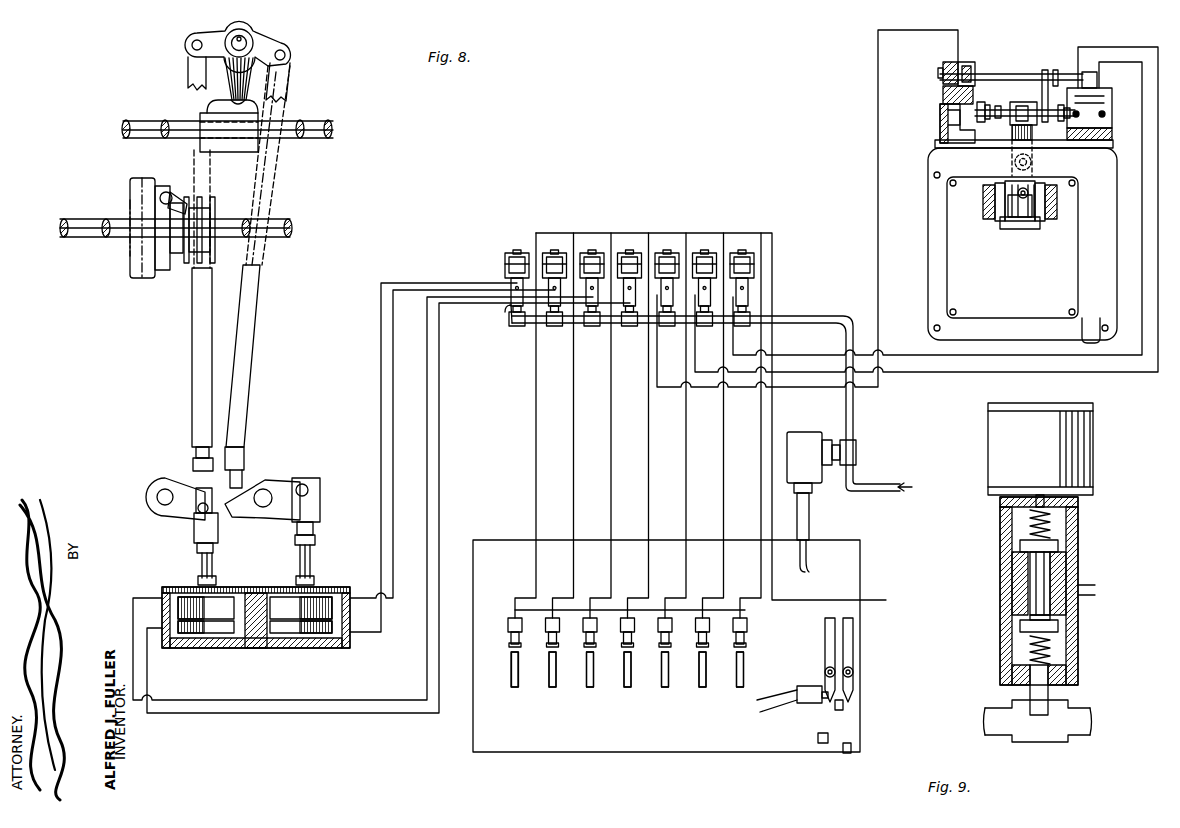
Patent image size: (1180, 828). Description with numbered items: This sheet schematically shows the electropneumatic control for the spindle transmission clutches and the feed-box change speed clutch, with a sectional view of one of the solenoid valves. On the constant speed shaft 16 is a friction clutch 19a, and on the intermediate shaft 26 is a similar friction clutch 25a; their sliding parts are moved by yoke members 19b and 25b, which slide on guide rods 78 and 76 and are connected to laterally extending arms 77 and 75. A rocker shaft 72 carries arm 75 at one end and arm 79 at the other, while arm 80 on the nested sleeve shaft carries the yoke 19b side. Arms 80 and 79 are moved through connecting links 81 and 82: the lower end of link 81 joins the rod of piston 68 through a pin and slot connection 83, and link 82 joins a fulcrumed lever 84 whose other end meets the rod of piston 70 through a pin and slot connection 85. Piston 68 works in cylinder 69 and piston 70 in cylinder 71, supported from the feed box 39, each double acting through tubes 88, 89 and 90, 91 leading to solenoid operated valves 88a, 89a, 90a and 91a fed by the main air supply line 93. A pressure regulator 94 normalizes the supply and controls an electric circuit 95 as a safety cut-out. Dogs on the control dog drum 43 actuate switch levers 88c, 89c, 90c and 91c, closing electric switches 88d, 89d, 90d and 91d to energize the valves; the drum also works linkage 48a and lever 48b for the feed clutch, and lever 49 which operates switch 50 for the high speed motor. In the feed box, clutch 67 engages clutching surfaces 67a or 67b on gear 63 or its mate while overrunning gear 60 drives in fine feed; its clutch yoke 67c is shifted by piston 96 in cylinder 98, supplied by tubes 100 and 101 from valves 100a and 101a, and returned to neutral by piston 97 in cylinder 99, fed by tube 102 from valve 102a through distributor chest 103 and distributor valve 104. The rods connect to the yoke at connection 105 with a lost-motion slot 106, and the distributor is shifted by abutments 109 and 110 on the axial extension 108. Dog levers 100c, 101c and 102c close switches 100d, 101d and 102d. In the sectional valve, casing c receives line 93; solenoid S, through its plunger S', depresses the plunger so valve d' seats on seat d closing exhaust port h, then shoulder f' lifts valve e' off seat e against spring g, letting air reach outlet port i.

In FIG. 8, the constant speed shaft 16 is at (122, 240).
In FIG. 8, the friction clutch 19a is at (146, 279).
In FIG. 8, the yoke member 19b is at (198, 162).
In FIG. 8, the friction clutch 25a is at (131, 204).
In FIG. 8, the yoke member 25b is at (196, 182).
In FIG. 8, the intermediate shaft 26 is at (78, 240).
In FIG. 8, the feed box 39 is at (948, 293).
In FIG. 8, the control dog drum 43 is at (862, 735).
In FIG. 8, the linkage 48a is at (854, 672).
In FIG. 8, the lever 48b is at (850, 638).
In FIG. 8, the lever 49 is at (854, 656).
In FIG. 8, the switch 50 is at (806, 687).
In FIG. 8, the overrunning gear 60 is at (990, 219).
In FIG. 8, the gear 63 is at (1052, 201).
In FIG. 8, the clutch 67 is at (1018, 222).
In FIG. 8, the clutching surface 67a is at (1033, 222).
In FIG. 8, the clutching surface 67b is at (1010, 222).
In FIG. 8, the clutch yoke 67c is at (1014, 160).
In FIG. 8, the piston 68 is at (216, 646).
In FIG. 8, the cylinder 69 is at (202, 606).
In FIG. 8, the piston 70 is at (318, 612).
In FIG. 8, the cylinder 71 is at (316, 650).
In FIG. 8, the rocker shaft 72 is at (245, 41).
In FIG. 8, the laterally extending arm 75 is at (224, 86).
In FIG. 8, the guide rod 76 is at (334, 131).
In FIG. 8, the laterally extending arm 77 is at (246, 92).
In FIG. 8, the guide rod 78 is at (286, 124).
In FIG. 8, the laterally extending arm 79 is at (284, 52).
In FIG. 8, the laterally extending arm 80 is at (222, 36).
In FIG. 8, the connecting link 81 is at (196, 372).
In FIG. 8, the connecting link 82 is at (266, 298).
In FIG. 8, the pin and slot connection 83 is at (200, 503).
In FIG. 8, the lever 84 is at (273, 483).
In FIG. 8, the pin and slot connection 85 is at (306, 488).
In FIG. 8, the tube 88 is at (148, 668).
In FIG. 8, the solenoid operated valve 88a is at (646, 283).
In FIG. 8, the switch lever 88c is at (624, 677).
In FIG. 8, the electric switch 88d is at (624, 634).
In FIG. 8, the tube 89 is at (135, 598).
In FIG. 8, the solenoid operated valve 89a is at (599, 330).
In FIG. 8, the switch lever 89c is at (586, 677).
In FIG. 8, the electric switch 89d is at (586, 634).
In FIG. 8, the tube 90 is at (360, 634).
In FIG. 8, the solenoid operated valve 90a is at (512, 326).
In FIG. 8, the switch lever 90c is at (510, 670).
In FIG. 8, the electric switch 90d is at (510, 622).
In FIG. 8, the tube 91 is at (393, 596).
In FIG. 8, the solenoid operated valve 91a is at (559, 330).
In FIG. 8, the switch lever 91c is at (548, 677).
In FIG. 8, the electric switch 91d is at (548, 634).
In FIG. 8, the main air supply line 93 is at (618, 327).
In FIG. 9, the main air supply line 93 is at (1092, 716).
In FIG. 8, the pressure regulator 94 is at (821, 486).
In FIG. 8, the electric circuit 95 is at (814, 560).
In FIG. 8, the piston 96 is at (1110, 135).
In FIG. 8, the piston 97 is at (946, 113).
In FIG. 8, the cylinder 98 is at (1099, 80).
In FIG. 8, the cylinder 99 is at (943, 95).
In FIG. 8, the air supply tube 100 is at (1026, 357).
In FIG. 8, the pneumatic solenoid valve 100a is at (752, 290).
In FIG. 8, the lever 100c is at (745, 665).
In FIG. 8, the switch 100d is at (746, 634).
In FIG. 8, the air supply tube 101 is at (1096, 381).
In FIG. 8, the pneumatic solenoid valve 101a is at (716, 289).
In FIG. 8, the dog lever 101c is at (712, 690).
In FIG. 8, the switch 101d is at (706, 634).
In FIG. 8, the air supply tube 102 is at (878, 272).
In FIG. 8, the pneumatic solenoid valve 102a is at (684, 283).
In FIG. 8, the dog lever 102c is at (664, 684).
In FIG. 8, the switch 102d is at (668, 634).
In FIG. 8, the distributor valve chest 103 is at (944, 65).
In FIG. 8, the distributor valve 104 is at (968, 62).
In FIG. 8, the connection 105 is at (1018, 103).
In FIG. 8, the slot 106 is at (1012, 128).
In FIG. 8, the axial extension 108 is at (1005, 74).
In FIG. 8, the abutment 109 is at (1056, 70).
In FIG. 8, the abutment 110 is at (1043, 72).
In FIG. 9, the solenoid S is at (1040, 449).
In FIG. 9, the solenoid plunger S' is at (1031, 487).
In FIG. 9, the exhaust port h is at (1000, 526).
In FIG. 9, the valve d' is at (1073, 531).
In FIG. 9, the valve seat d is at (1076, 582).
In FIG. 9, the outlet port i is at (1096, 590).
In FIG. 9, the valve casing c is at (1080, 606).
In FIG. 9, the valve seat e is at (1068, 627).
In FIG. 9, the valve e' is at (1004, 626).
In FIG. 9, the shoulder f' is at (1071, 649).
In FIG. 9, the spring g is at (1062, 656).